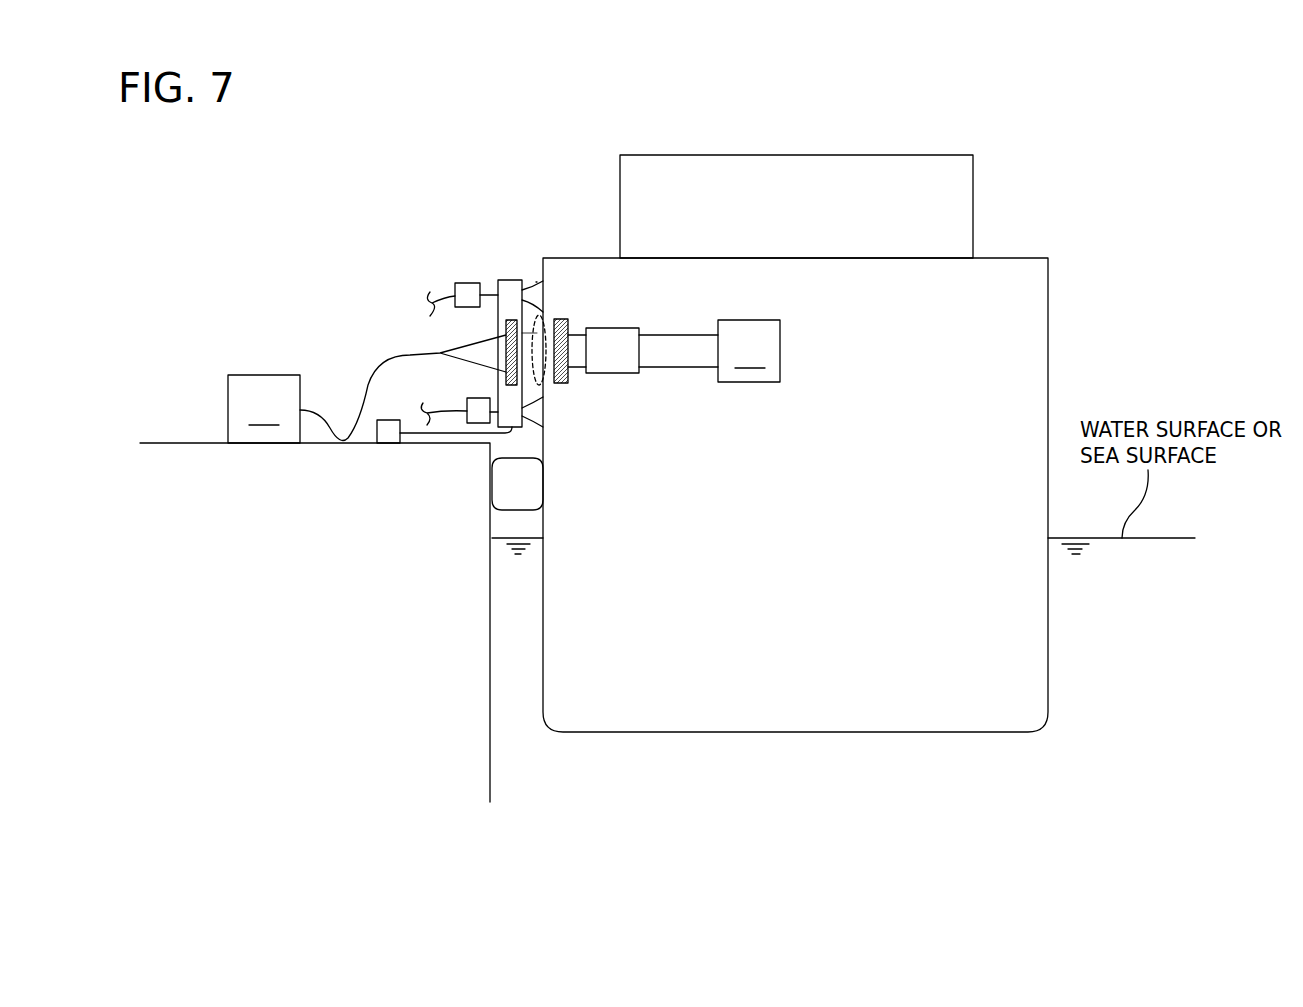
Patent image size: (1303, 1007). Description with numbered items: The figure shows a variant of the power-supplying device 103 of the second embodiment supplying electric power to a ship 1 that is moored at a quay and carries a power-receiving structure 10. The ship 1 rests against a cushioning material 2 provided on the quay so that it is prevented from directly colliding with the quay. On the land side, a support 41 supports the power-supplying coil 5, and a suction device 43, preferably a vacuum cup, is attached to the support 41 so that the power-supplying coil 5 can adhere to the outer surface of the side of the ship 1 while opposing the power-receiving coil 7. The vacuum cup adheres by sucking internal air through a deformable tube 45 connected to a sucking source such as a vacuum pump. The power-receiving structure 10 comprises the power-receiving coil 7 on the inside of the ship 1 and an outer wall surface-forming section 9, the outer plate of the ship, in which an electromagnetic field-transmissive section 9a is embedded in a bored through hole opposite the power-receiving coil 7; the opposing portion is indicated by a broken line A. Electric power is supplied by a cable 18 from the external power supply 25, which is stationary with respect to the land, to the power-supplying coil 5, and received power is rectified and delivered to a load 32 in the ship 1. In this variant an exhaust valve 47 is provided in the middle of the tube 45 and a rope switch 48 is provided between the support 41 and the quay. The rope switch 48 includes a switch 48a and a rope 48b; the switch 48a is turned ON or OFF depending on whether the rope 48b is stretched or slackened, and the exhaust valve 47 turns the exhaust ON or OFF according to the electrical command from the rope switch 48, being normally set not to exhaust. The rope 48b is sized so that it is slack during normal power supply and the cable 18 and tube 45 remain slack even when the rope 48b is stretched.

The ship 1 is at (1084, 238).
The cushioning material 2 is at (520, 485).
The power-supplying coil 5 is at (500, 375).
The power-receiving coil 7 is at (562, 318).
The outer wall surface-forming section 9 is at (537, 280).
The electromagnetic field-transmissive section 9a is at (537, 333).
The power-receiving structure 10 is at (531, 287).
The cable 18 is at (368, 390).
The external power supply 25 is at (264, 409).
The load 32 is at (749, 351).
The support 41 is at (497, 292).
The suction device 43 is at (532, 292).
The tube 45 is at (433, 296).
The exhaust valve 47 is at (464, 282).
The rope switch 48 is at (397, 478).
The switch 48a is at (388, 433).
The rope 48b is at (413, 440).
The power-supplying device 103 is at (361, 349).
The broken line A is at (545, 383).